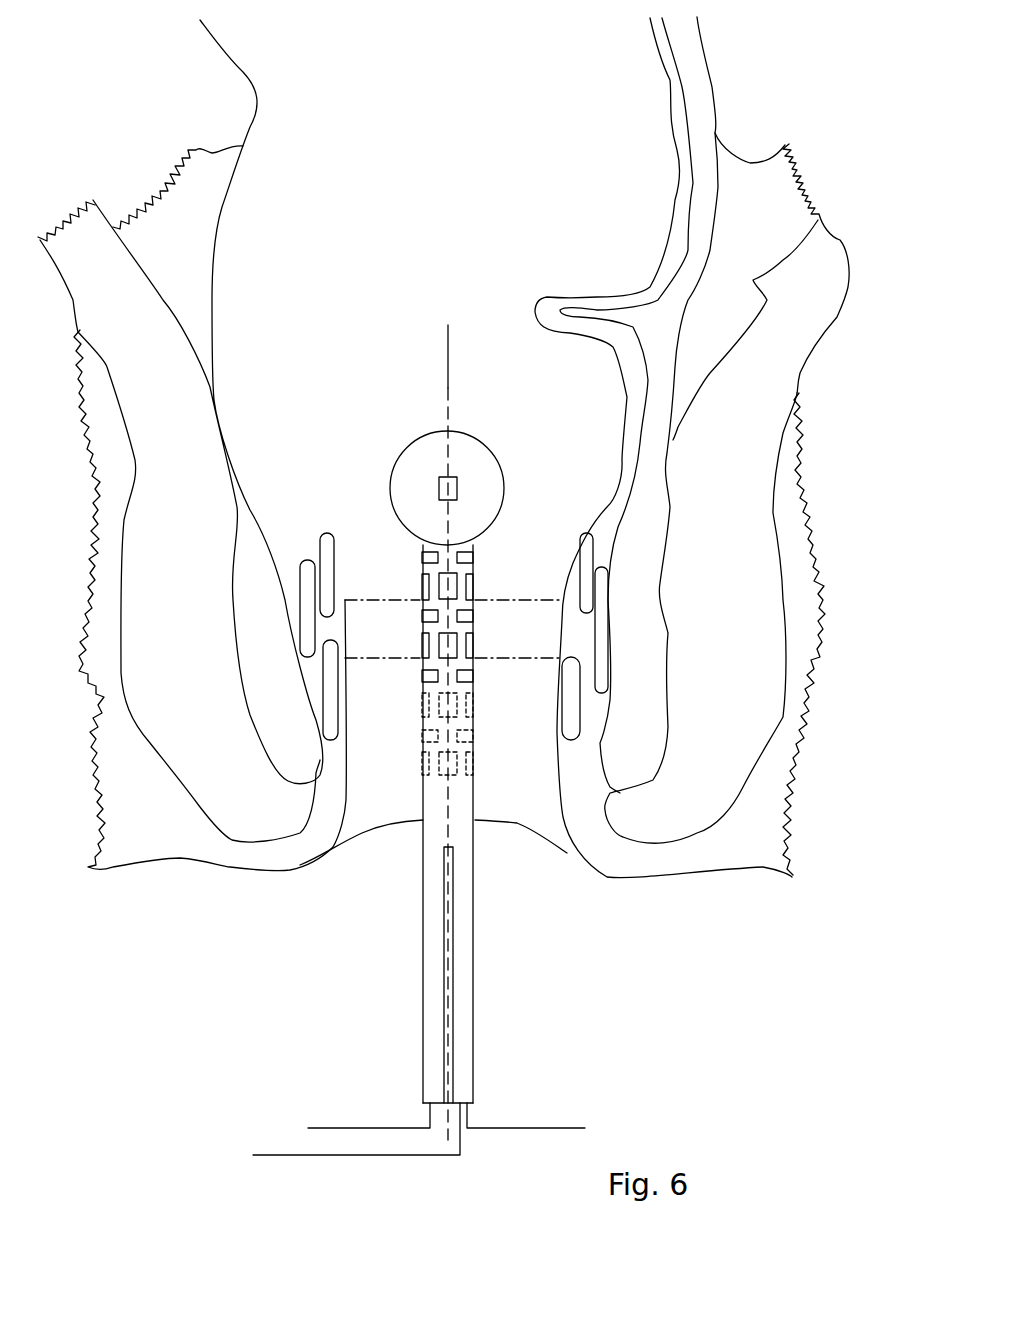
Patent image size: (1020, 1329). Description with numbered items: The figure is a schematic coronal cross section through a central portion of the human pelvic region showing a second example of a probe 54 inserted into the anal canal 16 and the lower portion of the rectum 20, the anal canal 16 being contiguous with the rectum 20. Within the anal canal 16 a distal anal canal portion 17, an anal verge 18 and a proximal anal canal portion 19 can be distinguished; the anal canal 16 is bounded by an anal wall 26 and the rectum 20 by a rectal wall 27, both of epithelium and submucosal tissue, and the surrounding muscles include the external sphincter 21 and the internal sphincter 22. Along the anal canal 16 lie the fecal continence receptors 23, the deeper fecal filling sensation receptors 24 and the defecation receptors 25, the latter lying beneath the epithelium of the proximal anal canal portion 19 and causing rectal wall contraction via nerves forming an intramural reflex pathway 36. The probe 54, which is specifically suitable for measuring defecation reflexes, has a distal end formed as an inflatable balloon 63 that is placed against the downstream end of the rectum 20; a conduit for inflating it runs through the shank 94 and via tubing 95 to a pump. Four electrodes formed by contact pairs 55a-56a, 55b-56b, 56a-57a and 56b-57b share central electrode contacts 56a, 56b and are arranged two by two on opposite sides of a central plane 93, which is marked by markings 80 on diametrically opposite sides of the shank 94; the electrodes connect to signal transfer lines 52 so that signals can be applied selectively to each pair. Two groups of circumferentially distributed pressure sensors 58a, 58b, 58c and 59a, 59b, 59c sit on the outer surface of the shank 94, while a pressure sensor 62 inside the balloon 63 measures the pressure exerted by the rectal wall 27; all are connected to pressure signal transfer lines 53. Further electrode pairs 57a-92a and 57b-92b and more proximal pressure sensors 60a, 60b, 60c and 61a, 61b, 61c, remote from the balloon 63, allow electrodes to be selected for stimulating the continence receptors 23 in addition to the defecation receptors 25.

The anal canal 16 is at (528, 748).
The distal anal canal portion 17 is at (528, 815).
The anal verge 18 is at (362, 833).
The proximal anal canal portion 19 is at (389, 635).
The rectum 20 is at (536, 484).
The external sphincter 21 is at (678, 803).
The internal sphincter 22 is at (630, 753).
The fecal continence receptors 23 is at (322, 707).
The fecal filling sensation receptors 24 is at (300, 580).
The defecation receptors 25 is at (320, 547).
The anal wall 26 is at (553, 693).
The rectal wall 27 is at (612, 483).
The intramural reflex pathway 36 is at (225, 330).
The signal transfer lines 52 is at (328, 1128).
The pressure signal transfer lines 53 is at (271, 1155).
The probe 54 is at (478, 853).
The electrode contact 55a is at (423, 553).
The electrode contact 55b is at (473, 555).
The central electrode contact 56a is at (423, 613).
The central electrode contact 56b is at (473, 612).
The electrode contact 57a is at (423, 678).
The electrode contact 57b is at (473, 678).
The pressure sensor 58a is at (422, 583).
The pressure sensor 58b is at (440, 577).
The pressure sensor 58c is at (473, 582).
The pressure sensor 59a is at (423, 648).
The pressure sensor 59b is at (440, 657).
The pressure sensor 59c is at (473, 647).
The pressure sensor 60a is at (423, 707).
The pressure sensor 60b is at (442, 717).
The pressure sensor 60c is at (472, 707).
The pressure sensor 61a is at (422, 777).
The pressure sensor 61b is at (432, 777).
The pressure sensor 61c is at (473, 772).
The pressure sensor 62 is at (438, 488).
The inflatable balloon 63 is at (415, 443).
The markings 80 is at (453, 1033).
The electrode contact 92a is at (423, 743).
The electrode contact 92b is at (473, 742).
The central plane 93 is at (448, 338).
The shank 94 is at (473, 985).
The tubing 95 is at (518, 1128).